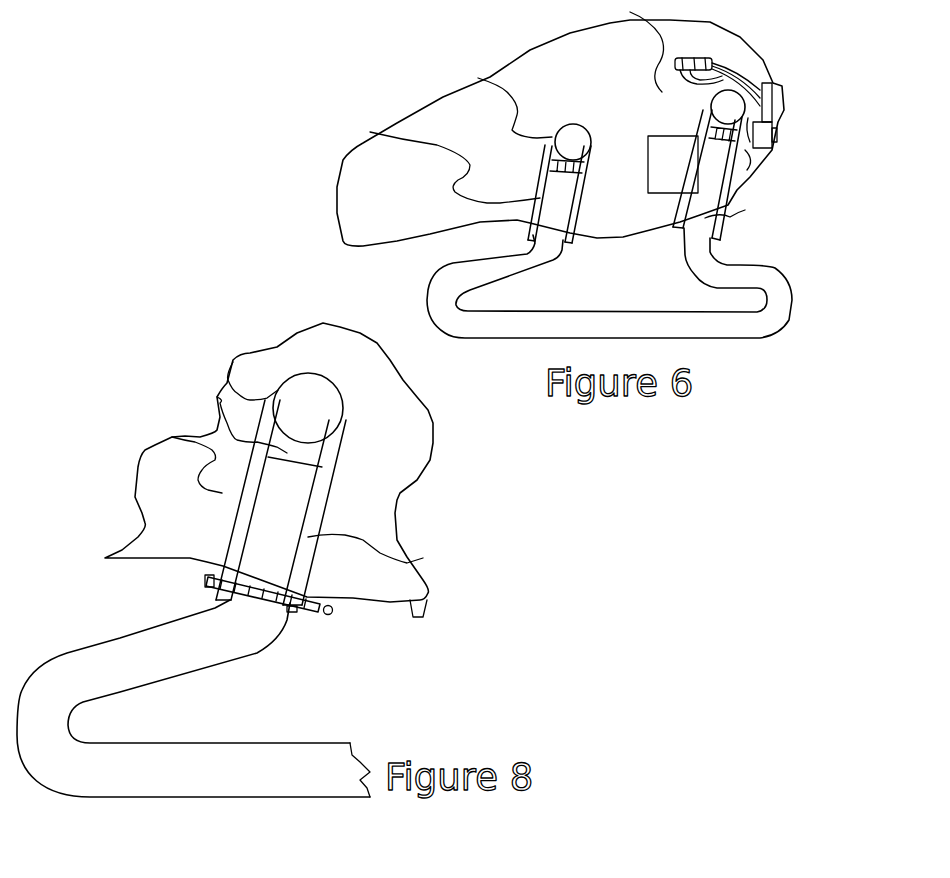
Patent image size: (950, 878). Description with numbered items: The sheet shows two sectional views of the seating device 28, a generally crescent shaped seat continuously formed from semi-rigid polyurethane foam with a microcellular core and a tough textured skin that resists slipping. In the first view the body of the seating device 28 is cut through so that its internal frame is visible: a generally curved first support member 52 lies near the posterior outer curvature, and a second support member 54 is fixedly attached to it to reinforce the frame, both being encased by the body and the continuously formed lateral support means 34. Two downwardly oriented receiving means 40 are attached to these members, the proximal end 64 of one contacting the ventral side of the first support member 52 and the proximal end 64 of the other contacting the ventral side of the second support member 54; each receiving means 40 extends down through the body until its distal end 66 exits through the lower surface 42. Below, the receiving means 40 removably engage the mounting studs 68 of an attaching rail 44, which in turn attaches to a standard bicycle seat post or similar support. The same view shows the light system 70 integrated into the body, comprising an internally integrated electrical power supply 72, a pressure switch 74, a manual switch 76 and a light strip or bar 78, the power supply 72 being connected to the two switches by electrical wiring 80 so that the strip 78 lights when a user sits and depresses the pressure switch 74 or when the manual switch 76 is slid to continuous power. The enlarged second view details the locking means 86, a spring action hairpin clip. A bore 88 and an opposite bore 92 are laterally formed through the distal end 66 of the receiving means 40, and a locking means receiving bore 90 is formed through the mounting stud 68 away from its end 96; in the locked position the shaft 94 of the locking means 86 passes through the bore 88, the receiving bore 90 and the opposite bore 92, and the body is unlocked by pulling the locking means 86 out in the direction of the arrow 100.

In FIG. 6, the seating device 28 is at (380, 83).
In FIG. 6, the lateral support means 34 is at (358, 241).
In FIG. 6, the receiving means 40 is at (552, 218).
In FIG. 8, the receiving means 40 is at (410, 558).
In FIG. 6, the lower surface 42 is at (665, 243).
In FIG. 8, the lower surface 42 is at (430, 594).
In FIG. 6, the attaching rail 44 is at (745, 340).
In FIG. 8, the attaching rail 44 is at (152, 797).
In FIG. 6, the first support member 52 is at (630, 73).
In FIG. 6, the second support member 54 is at (572, 144).
In FIG. 8, the second support member 54 is at (308, 410).
In FIG. 6, the proximal end 64 is at (558, 69).
In FIG. 8, the proximal end 64 is at (233, 362).
In FIG. 6, the distal end 66 is at (558, 247).
In FIG. 8, the distal end 66 is at (212, 596).
In FIG. 6, the mounting stud 68 is at (773, 212).
In FIG. 8, the mounting stud 68 is at (172, 437).
In FIG. 6, the light system 70 is at (782, 117).
In FIG. 6, the electrical power supply 72 is at (655, 193).
In FIG. 6, the pressure switch 74 is at (683, 32).
In FIG. 6, the manual switch 76 is at (778, 137).
In FIG. 6, the light strip or bar 78 is at (773, 100).
In FIG. 6, the electrical wiring 80 is at (743, 73).
In FIG. 8, the locking means 86 is at (333, 612).
In FIG. 8, the bore 88 is at (290, 613).
In FIG. 8, the locking means receiving bore 90 is at (262, 608).
In FIG. 8, the opposite bore 92 is at (207, 579).
In FIG. 8, the shaft 94 is at (305, 610).
In FIG. 8, the end 96 is at (217, 397).
In FIG. 8, the arrow 100 is at (390, 637).